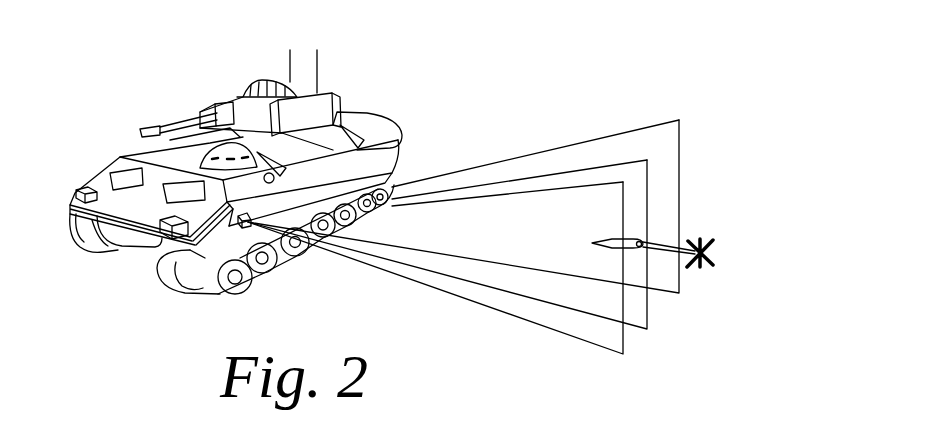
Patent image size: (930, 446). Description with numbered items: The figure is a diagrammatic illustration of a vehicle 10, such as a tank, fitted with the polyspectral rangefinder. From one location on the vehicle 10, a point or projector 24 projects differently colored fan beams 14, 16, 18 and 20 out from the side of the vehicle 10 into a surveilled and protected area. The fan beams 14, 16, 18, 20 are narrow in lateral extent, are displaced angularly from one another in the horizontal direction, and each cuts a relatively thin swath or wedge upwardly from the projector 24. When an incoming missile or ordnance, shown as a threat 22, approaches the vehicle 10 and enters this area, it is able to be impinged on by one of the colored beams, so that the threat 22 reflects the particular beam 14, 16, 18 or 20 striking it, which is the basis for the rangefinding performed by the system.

The vehicle 10 is at (145, 100).
The fan beam 14 is at (628, 353).
The fan beam 16 is at (647, 329).
The fan beam 18 is at (679, 292).
The fan beam 20 is at (633, 205).
The threat 22 is at (612, 242).
The projector 24 is at (246, 228).